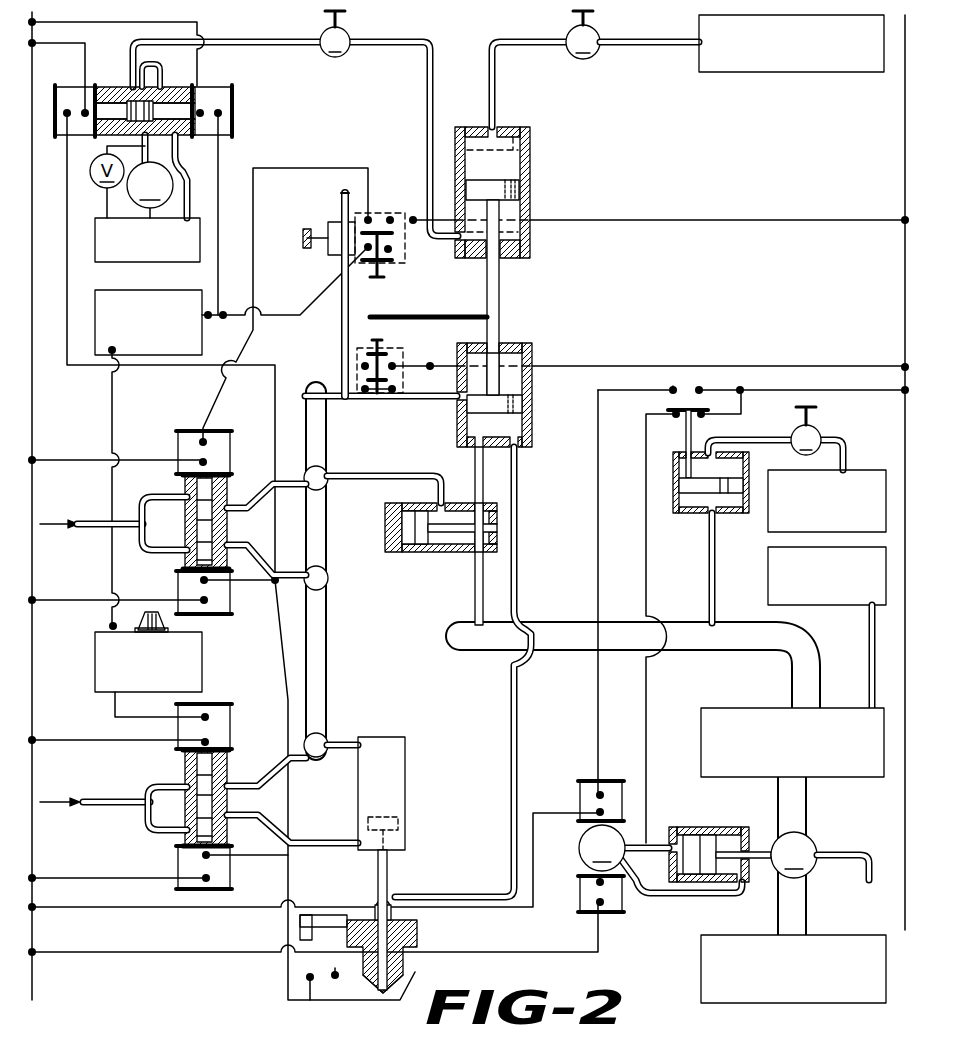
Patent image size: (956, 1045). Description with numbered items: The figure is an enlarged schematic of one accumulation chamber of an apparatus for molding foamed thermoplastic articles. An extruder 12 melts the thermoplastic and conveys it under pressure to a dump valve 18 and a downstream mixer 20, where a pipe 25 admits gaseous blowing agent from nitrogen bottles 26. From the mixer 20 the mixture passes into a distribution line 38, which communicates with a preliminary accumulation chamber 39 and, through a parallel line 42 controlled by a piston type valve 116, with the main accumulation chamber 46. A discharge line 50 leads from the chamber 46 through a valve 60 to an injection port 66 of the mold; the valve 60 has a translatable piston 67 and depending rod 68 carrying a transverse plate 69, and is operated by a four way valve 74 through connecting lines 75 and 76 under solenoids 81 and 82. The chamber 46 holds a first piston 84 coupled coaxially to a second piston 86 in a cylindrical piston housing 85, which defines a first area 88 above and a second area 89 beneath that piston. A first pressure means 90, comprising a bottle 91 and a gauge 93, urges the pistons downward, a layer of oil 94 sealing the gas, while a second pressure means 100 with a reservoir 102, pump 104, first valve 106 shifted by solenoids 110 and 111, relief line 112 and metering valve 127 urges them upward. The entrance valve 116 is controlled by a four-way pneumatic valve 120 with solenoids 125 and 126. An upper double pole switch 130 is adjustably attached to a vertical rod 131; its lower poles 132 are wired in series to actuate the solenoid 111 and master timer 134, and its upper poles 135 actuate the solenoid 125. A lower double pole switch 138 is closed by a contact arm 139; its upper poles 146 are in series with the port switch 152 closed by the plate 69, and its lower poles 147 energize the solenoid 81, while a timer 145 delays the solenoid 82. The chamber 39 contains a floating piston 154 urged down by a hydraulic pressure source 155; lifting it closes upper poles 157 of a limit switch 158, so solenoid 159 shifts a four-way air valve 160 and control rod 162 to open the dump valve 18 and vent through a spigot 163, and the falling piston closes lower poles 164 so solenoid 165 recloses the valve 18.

The extruder 12 is at (723, 993).
The dump valve 18 is at (818, 838).
The mixer 20 is at (737, 788).
The pipe 25 is at (868, 670).
The nitrogen bottles 26 is at (814, 600).
The distribution line 38 is at (777, 680).
The preliminary accumulation chamber 39 is at (673, 511).
The parallel line 42 is at (475, 605).
The main accumulation chamber 46 is at (532, 427).
The discharge line 50 is at (517, 731).
The valve 60 is at (399, 728).
The injection port 66 is at (378, 993).
The translatable piston 67 is at (388, 815).
The depending rod 68 is at (388, 870).
The transverse plate 69 is at (376, 905).
The four way valve 74 is at (187, 813).
The connecting line 75 is at (352, 843).
The connecting line 76 is at (348, 745).
The solenoid 81 is at (223, 877).
The solenoid 82 is at (223, 727).
The first piston 84 is at (508, 397).
The cylindrical piston housing 85 is at (530, 203).
The second piston 86 is at (517, 191).
The first area 88 is at (517, 163).
The second area 89 is at (526, 232).
The first pressure means 90 is at (782, 84).
The bottle 91 is at (795, 72).
The gauge 93 is at (592, 60).
The layer of oil 94 is at (536, 182).
The second pressure means 100 is at (250, 101).
The hydraulic fluid reservoir 102 is at (95, 246).
The pump 104 is at (174, 180).
The first valve 106 is at (118, 86).
The solenoid 110 is at (58, 97).
The solenoid 111 is at (233, 94).
The relief line 112 is at (190, 200).
The piston type valve 116 is at (453, 553).
The four-way pneumatic valve 120 is at (185, 560).
The controlling solenoid 125 is at (192, 428).
The controlling solenoid 126 is at (180, 590).
The manually adjustable metering valve 127 is at (340, 59).
The upper double pole switch 130 is at (372, 271).
The vertical rod 131 is at (342, 278).
The lower poles 132 is at (392, 250).
The timer 134 is at (99, 358).
The upper poles 135 is at (405, 187).
The lower double pole switch 138 is at (370, 379).
The contact arm 139 is at (405, 315).
The timer 145 is at (202, 653).
The upper poles 146 is at (397, 357).
The lower poles 147 is at (392, 395).
The switch 152 is at (300, 937).
The floating piston 154 is at (679, 486).
The hydraulic pressure source 155 is at (876, 470).
The upper poles 157 is at (674, 387).
The limit switch 158 is at (706, 366).
The solenoid 159 is at (580, 795).
The four-way air valve 160 is at (579, 848).
The control rod 162 is at (759, 858).
The spigot 163 is at (868, 880).
The lower poles 164 is at (670, 418).
The solenoid 165 is at (580, 895).